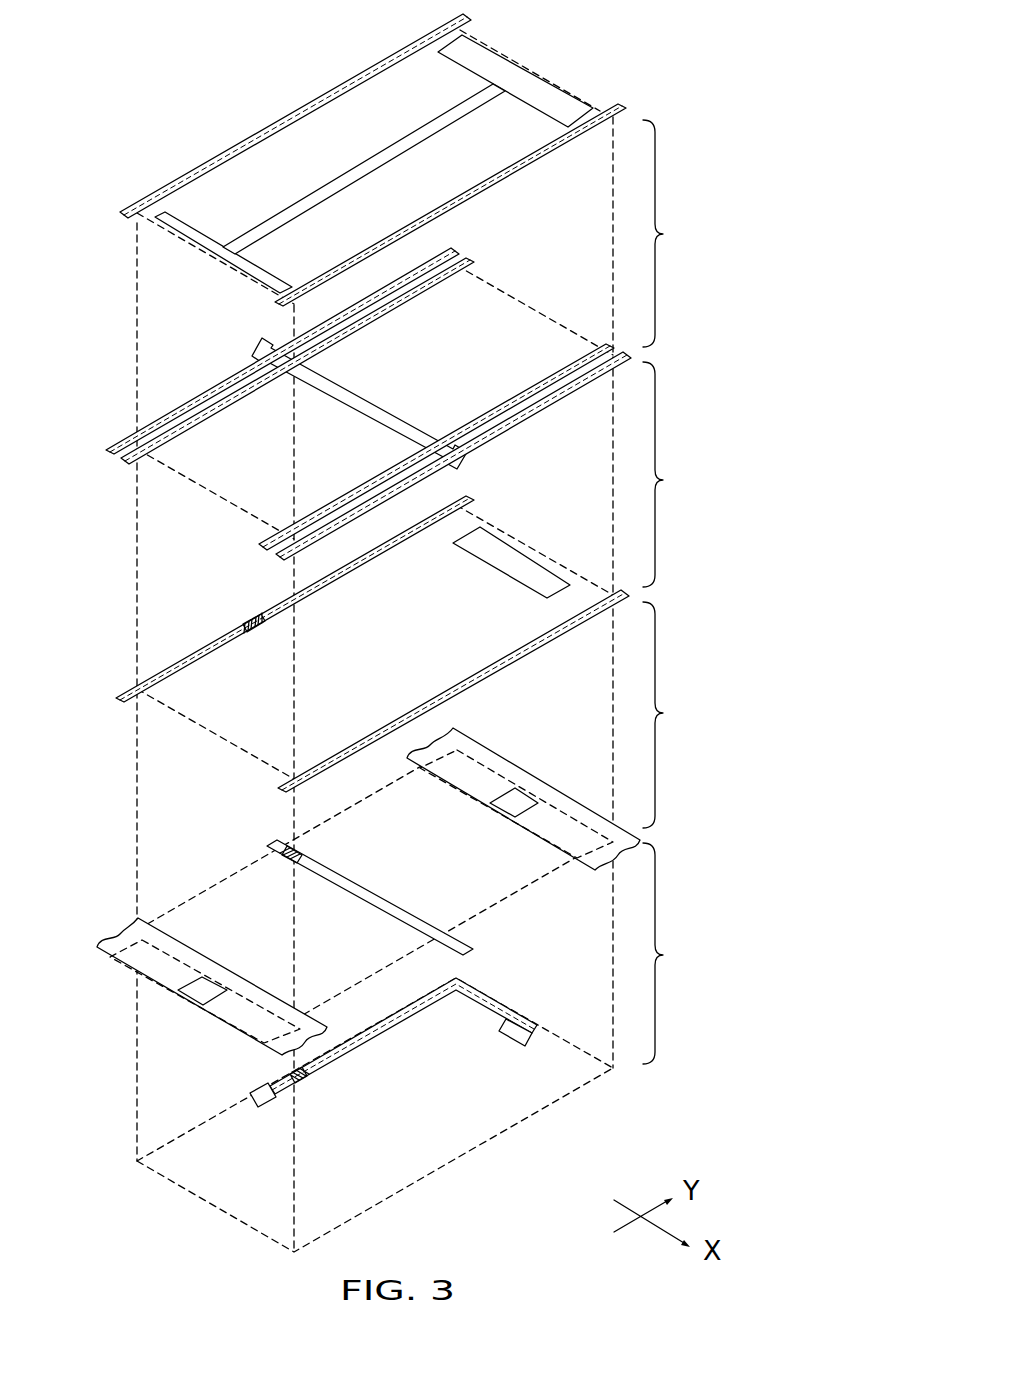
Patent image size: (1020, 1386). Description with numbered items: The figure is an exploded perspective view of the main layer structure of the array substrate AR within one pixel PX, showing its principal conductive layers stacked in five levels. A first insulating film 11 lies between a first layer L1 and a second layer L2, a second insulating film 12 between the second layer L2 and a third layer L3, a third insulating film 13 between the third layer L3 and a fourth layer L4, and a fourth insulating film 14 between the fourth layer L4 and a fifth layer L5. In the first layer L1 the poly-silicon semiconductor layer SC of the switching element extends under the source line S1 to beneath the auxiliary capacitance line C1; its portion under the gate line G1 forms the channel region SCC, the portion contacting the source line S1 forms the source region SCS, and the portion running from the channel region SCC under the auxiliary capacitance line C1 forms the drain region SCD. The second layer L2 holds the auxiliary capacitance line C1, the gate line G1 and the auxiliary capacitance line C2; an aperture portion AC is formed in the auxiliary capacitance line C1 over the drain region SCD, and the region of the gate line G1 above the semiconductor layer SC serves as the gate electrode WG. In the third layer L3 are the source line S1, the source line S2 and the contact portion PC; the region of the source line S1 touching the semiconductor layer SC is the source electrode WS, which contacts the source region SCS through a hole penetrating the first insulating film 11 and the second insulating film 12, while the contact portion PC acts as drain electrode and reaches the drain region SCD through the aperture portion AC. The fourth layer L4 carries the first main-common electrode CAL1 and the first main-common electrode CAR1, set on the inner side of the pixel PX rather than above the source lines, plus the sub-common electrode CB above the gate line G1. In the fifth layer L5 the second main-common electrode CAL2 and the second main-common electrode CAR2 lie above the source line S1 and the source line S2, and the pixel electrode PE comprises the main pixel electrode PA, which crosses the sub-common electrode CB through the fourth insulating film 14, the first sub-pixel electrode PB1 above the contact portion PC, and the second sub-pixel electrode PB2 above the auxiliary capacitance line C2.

The pixel PX is at (585, 1100).
The array substrate AR is at (733, 182).
The pixel electrode PE is at (374, 146).
The main pixel electrode PA is at (388, 153).
The first sub-pixel electrode PB1 is at (463, 57).
The second sub-pixel electrode PB2 is at (195, 228).
The second main-common electrode CAL2 is at (262, 130).
The second main-common electrode CAR2 is at (445, 208).
The first main-common electrode CAL1 is at (207, 420).
The first main-common electrode CAR1 is at (363, 484).
The sub-common electrode CB is at (397, 416).
The contact portion PC is at (490, 564).
The source line S1 is at (268, 604).
The source line S2 is at (280, 792).
The source electrode WS is at (256, 633).
The auxiliary capacitance line C1 is at (528, 817).
The auxiliary capacitance line C2 is at (137, 919).
The aperture portion AC is at (528, 824).
The gate line G1 is at (392, 902).
The gate electrode WG is at (290, 861).
The semiconductor layer SC is at (413, 1062).
The source region SCS is at (254, 1106).
The drain region SCD is at (512, 1041).
The channel region SCC is at (302, 1076).
The first layer L1 is at (677, 1073).
The second layer L2 is at (679, 835).
The third layer L3 is at (677, 598).
The fourth layer L4 is at (677, 360).
The fifth layer L5 is at (676, 104).
The first insulating film 11 is at (668, 953).
The second insulating film 12 is at (670, 715).
The third insulating film 13 is at (670, 474).
The fourth insulating film 14 is at (669, 233).